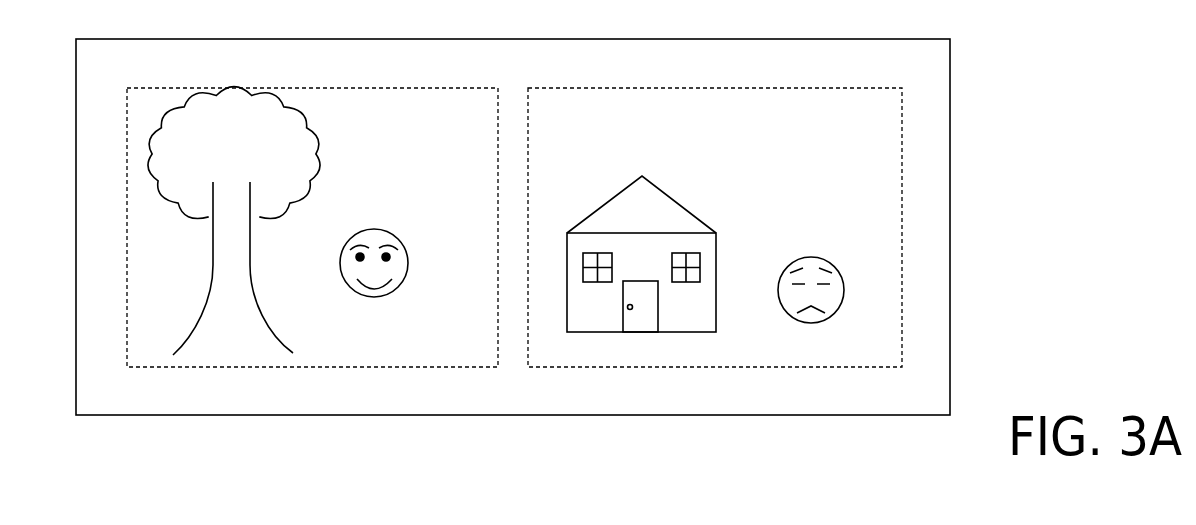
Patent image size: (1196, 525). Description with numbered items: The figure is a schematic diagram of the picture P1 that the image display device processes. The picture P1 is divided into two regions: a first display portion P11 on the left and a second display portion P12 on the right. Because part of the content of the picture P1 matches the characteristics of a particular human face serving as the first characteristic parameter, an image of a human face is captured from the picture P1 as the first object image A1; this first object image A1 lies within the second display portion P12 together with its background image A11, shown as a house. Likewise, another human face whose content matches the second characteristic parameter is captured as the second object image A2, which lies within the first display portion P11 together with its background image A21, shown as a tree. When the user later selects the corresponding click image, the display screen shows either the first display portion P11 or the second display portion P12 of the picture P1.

The picture P1 is at (950, 77).
The first display portion P11 is at (312, 367).
The second display portion P12 is at (713, 367).
The background image A21 is at (225, 295).
The second object image A2 is at (373, 298).
The background image A11 is at (607, 320).
The first object image A1 is at (808, 323).